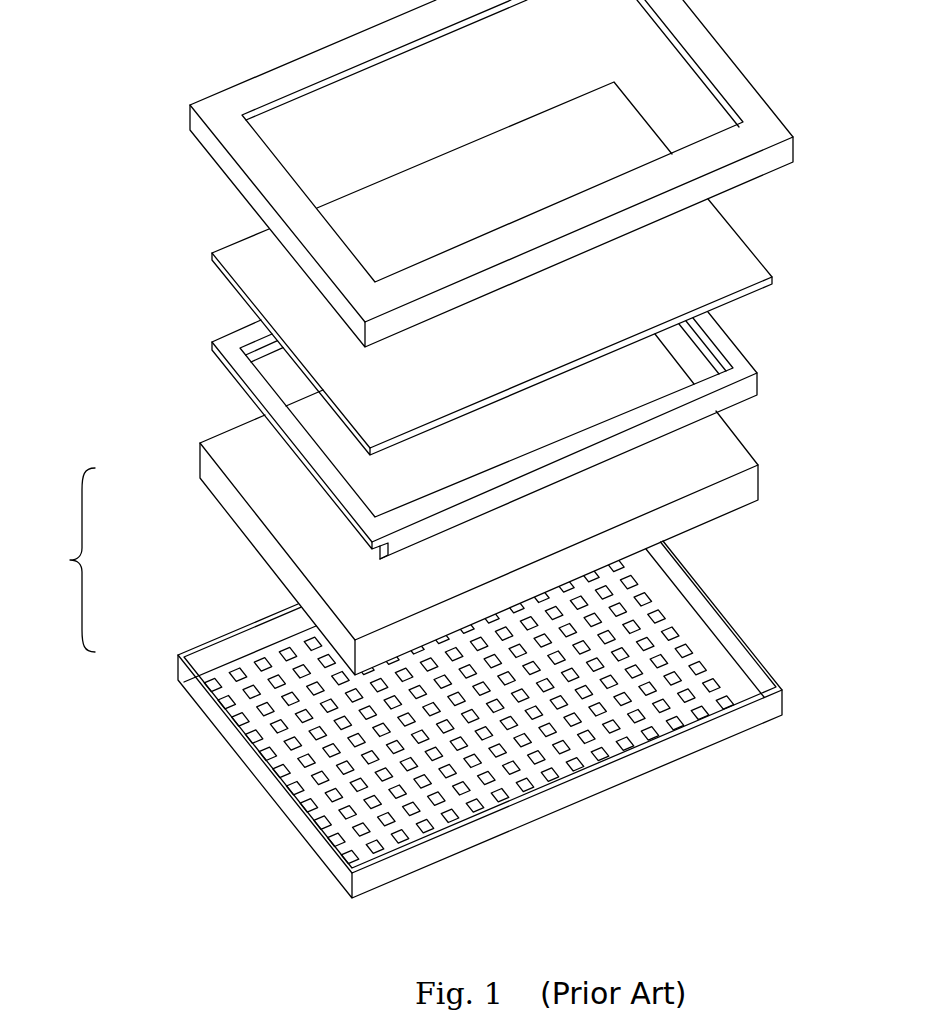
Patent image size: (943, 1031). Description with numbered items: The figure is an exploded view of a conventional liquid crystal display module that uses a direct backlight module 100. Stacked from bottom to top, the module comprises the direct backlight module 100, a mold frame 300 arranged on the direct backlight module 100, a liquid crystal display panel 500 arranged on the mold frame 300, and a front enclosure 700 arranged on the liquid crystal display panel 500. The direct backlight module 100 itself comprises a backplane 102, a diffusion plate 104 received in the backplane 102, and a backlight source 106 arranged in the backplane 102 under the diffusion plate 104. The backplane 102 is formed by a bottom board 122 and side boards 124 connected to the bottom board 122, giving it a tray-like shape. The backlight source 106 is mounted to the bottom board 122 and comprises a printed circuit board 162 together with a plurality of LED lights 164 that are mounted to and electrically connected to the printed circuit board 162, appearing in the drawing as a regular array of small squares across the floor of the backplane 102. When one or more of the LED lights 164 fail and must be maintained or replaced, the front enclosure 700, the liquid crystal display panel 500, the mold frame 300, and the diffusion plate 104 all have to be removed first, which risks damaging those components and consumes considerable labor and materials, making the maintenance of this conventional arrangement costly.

The direct backlight module 100 is at (443, 616).
The backplane 102 is at (487, 711).
The diffusion plate 104 is at (292, 510).
The backlight source 106 is at (303, 692).
The bottom board 122 is at (757, 693).
The side boards 124 is at (742, 723).
The printed circuit board 162 is at (713, 665).
The LED lights 164 is at (657, 650).
The mold frame 300 is at (228, 348).
The liquid crystal display panel 500 is at (228, 258).
The front enclosure 700 is at (228, 117).